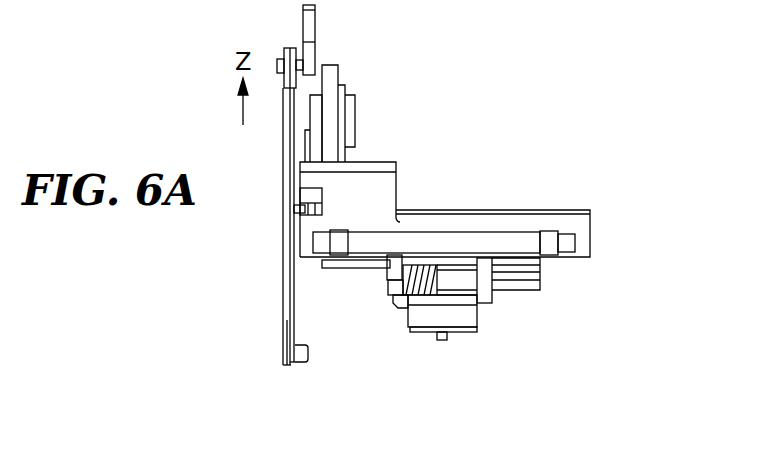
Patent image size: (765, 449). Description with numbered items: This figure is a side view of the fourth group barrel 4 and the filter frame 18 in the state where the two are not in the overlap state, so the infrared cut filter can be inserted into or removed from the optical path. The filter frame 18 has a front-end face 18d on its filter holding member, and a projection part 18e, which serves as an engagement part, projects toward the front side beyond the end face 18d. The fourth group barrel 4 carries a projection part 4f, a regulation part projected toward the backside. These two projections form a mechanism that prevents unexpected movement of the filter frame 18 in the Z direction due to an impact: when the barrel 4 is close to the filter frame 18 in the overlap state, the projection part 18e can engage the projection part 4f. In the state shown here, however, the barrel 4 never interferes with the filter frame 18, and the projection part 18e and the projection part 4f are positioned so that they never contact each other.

The fourth group barrel 4 is at (497, 210).
The projection part 4f is at (311, 148).
The filter frame 18 is at (287, 368).
The front-end face 18d is at (296, 283).
The projection part 18e is at (297, 214).